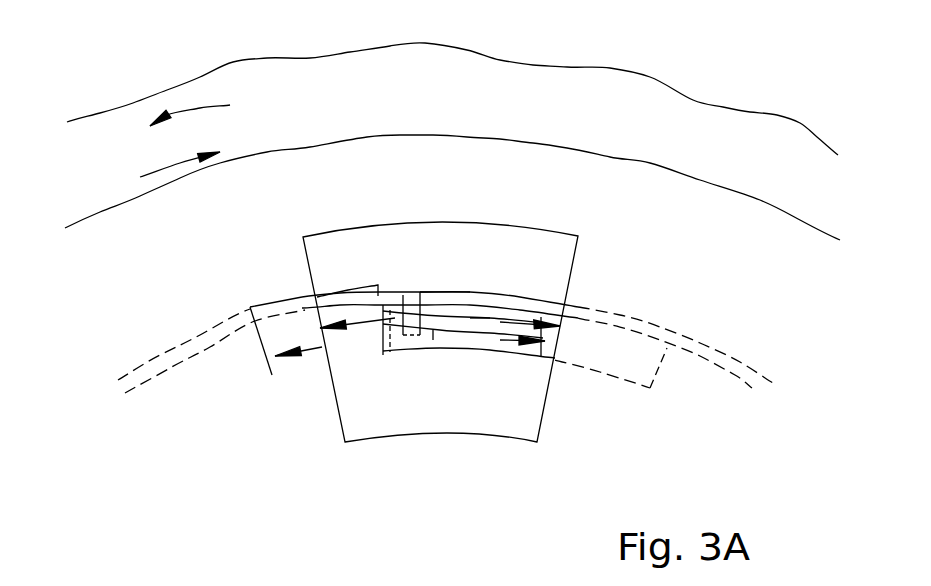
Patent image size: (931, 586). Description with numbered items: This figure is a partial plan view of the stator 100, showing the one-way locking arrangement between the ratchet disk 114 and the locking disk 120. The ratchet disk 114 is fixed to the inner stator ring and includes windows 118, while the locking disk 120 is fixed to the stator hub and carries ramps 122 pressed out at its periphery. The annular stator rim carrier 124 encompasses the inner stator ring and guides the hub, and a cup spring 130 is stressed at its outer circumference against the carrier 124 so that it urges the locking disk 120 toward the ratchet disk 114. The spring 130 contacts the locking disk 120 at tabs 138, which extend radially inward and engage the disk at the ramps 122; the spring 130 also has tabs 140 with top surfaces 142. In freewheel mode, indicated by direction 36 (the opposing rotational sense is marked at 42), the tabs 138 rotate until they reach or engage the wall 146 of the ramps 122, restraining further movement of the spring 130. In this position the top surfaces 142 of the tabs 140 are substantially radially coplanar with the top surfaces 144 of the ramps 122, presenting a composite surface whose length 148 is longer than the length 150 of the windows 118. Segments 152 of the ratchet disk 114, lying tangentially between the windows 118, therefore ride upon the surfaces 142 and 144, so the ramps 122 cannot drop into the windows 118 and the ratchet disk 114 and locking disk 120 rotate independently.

The freewheel direction 36 is at (203, 107).
The bypass gas flow direction 42 is at (165, 168).
The stator 100 is at (712, 140).
The ratchet disk 114 is at (690, 247).
The windows 118 is at (540, 312).
The locking disk 120 is at (490, 305).
The ramps 122 is at (521, 362).
The stator rim carrier 124 is at (643, 127).
The cup spring 130 is at (462, 259).
The tabs 138 is at (410, 294).
The tabs 140 is at (365, 287).
The top surfaces 142 is at (333, 293).
The top surfaces 144 is at (500, 332).
The wall 146 is at (385, 350).
The length 148 is at (433, 340).
The length 150 is at (477, 320).
The segments 152 is at (273, 398).